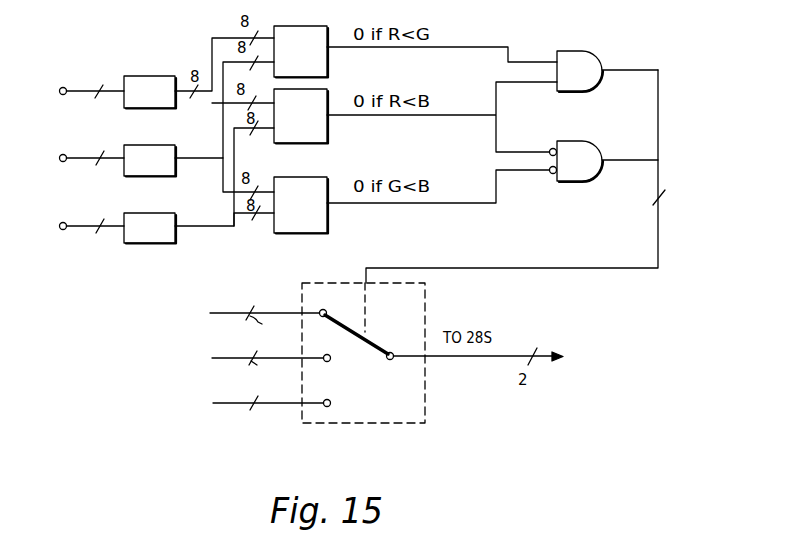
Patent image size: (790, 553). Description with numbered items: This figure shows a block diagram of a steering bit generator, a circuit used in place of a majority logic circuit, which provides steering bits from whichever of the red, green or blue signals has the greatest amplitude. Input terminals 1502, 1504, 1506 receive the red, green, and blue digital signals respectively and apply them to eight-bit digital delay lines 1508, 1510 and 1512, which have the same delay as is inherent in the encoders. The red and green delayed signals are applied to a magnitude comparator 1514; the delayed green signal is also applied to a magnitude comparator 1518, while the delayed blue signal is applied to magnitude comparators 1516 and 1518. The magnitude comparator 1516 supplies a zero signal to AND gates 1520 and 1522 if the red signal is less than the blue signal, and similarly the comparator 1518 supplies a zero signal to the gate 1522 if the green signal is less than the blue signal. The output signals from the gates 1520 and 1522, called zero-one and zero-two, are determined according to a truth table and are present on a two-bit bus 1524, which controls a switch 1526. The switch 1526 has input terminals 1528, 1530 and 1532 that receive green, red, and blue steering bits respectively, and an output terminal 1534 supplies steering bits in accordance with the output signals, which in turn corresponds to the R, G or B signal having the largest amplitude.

The input terminal 1502 is at (66, 90).
The input terminal 1504 is at (66, 160).
The input terminal 1506 is at (63, 230).
The eight-bit digital delay line 1508 is at (133, 109).
The eight-bit digital delay line 1510 is at (158, 177).
The eight-bit digital delay line 1512 is at (137, 244).
The magnitude comparator 1514 is at (328, 68).
The magnitude comparator 1516 is at (328, 135).
The magnitude comparator 1518 is at (328, 222).
The AND gate 1520 is at (601, 78).
The AND gate 1522 is at (580, 183).
The two-bit bus 1524 is at (508, 268).
The switch 1526 is at (325, 370).
The input terminal 1528 is at (334, 320).
The input terminal 1530 is at (330, 361).
The input terminal 1532 is at (327, 406).
The output terminal 1534 is at (391, 352).